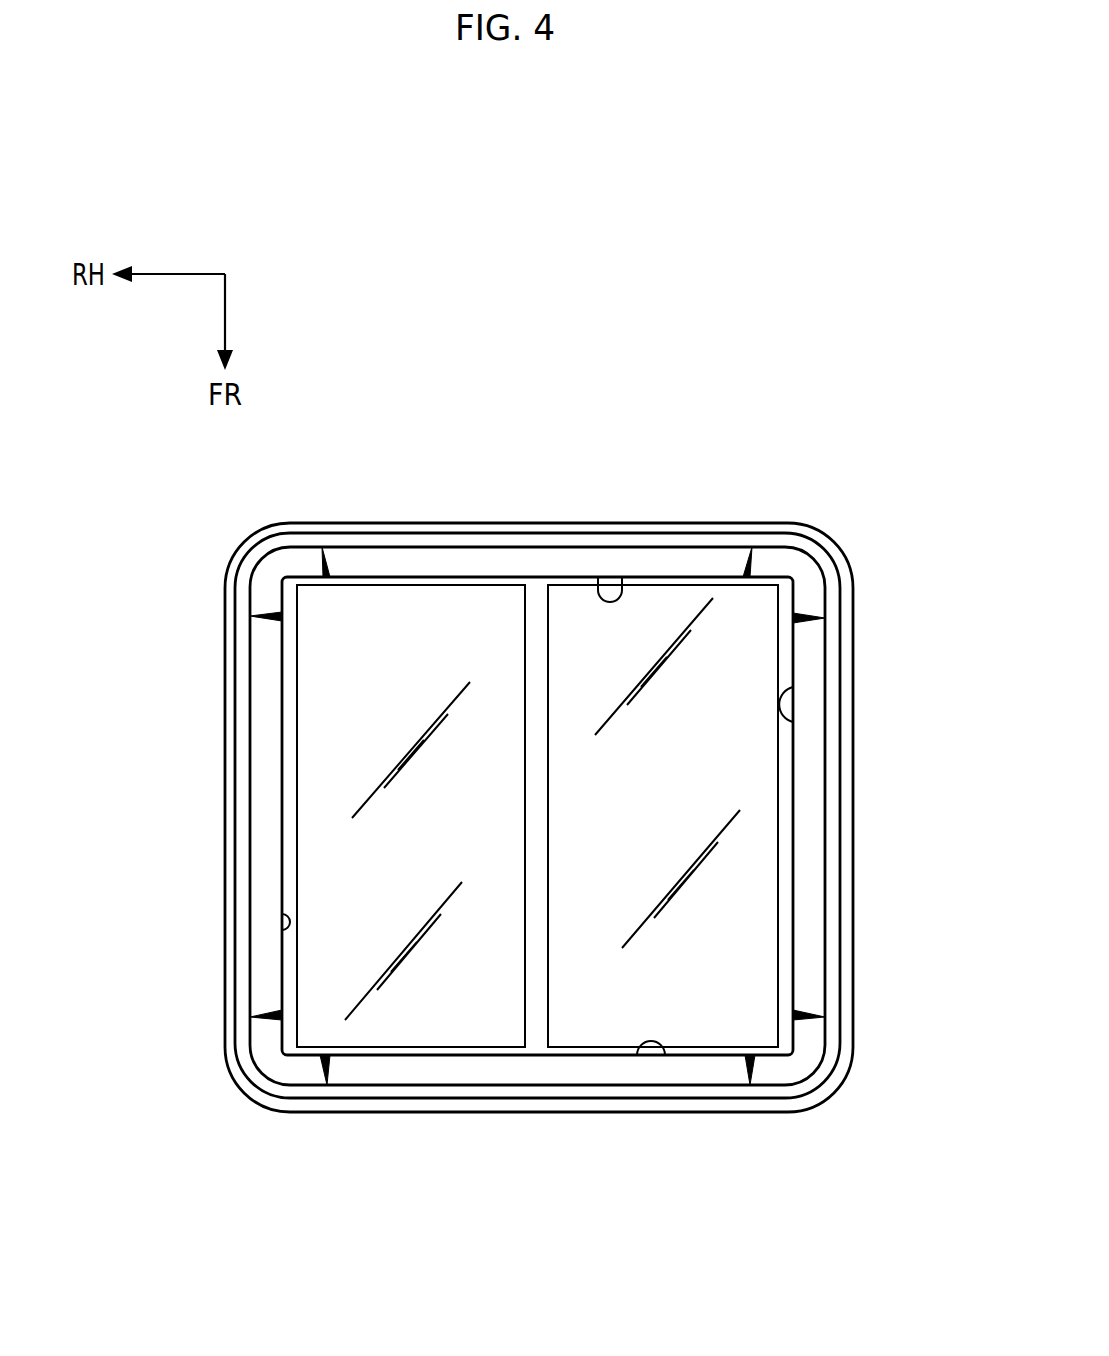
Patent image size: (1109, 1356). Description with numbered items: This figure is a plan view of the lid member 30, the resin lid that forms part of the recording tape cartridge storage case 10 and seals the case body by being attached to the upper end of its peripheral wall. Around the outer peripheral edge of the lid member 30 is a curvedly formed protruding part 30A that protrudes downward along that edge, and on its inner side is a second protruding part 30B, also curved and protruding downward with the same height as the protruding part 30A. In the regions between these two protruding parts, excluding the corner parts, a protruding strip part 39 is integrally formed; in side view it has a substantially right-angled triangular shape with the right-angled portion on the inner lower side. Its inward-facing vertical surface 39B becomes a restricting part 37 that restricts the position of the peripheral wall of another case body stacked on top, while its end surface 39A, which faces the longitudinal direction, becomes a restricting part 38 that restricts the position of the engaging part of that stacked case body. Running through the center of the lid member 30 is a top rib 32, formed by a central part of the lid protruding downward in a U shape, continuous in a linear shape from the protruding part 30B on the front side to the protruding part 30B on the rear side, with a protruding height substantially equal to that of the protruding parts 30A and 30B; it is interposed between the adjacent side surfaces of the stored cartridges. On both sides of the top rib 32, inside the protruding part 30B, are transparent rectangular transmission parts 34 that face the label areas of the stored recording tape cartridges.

The lid member 30 is at (583, 724).
The storage case 10 is at (583, 724).
The protruding part 30A is at (833, 577).
The protruding part 30B is at (286, 690).
The top rib 32 is at (540, 803).
The transmission part 34 is at (322, 883).
The protruding strip part 39 is at (523, 566).
The end surface 39A is at (523, 829).
The restricting part 38 is at (323, 560).
The vertical surface 39B is at (538, 823).
The restricting part 37 is at (622, 577).